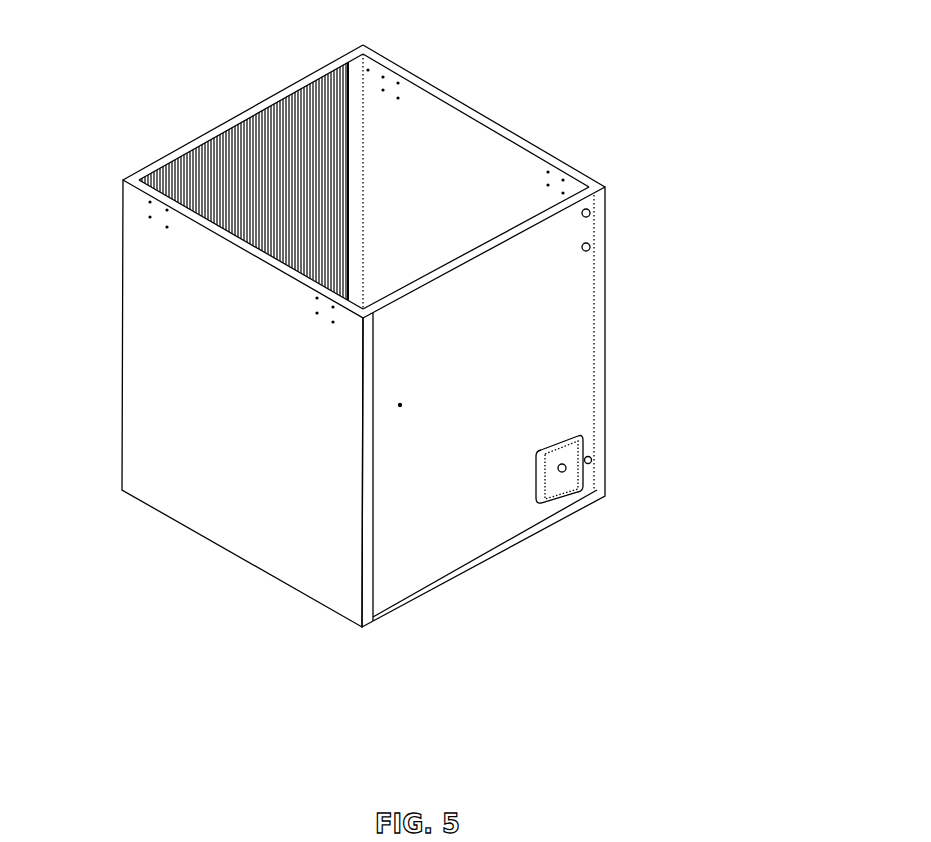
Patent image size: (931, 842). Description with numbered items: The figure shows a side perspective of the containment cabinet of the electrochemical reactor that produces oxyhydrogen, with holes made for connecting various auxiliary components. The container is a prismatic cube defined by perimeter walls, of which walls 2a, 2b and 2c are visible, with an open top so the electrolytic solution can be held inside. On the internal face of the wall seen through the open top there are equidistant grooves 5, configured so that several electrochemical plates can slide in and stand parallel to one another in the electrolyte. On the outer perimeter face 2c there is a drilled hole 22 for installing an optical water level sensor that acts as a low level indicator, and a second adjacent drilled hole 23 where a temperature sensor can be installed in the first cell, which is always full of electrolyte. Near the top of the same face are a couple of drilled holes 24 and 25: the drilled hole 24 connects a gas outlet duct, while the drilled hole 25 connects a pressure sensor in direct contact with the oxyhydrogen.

The equidistant grooves 5 is at (236, 160).
The perimeter wall 2a is at (364, 166).
The perimeter wall 2b is at (200, 312).
The perimeter wall 2c is at (448, 495).
The drilled hole 22 is at (562, 470).
The second adjacent drilled hole 23 is at (590, 459).
The drilled hole 24 is at (603, 198).
The drilled hole 25 is at (597, 245).